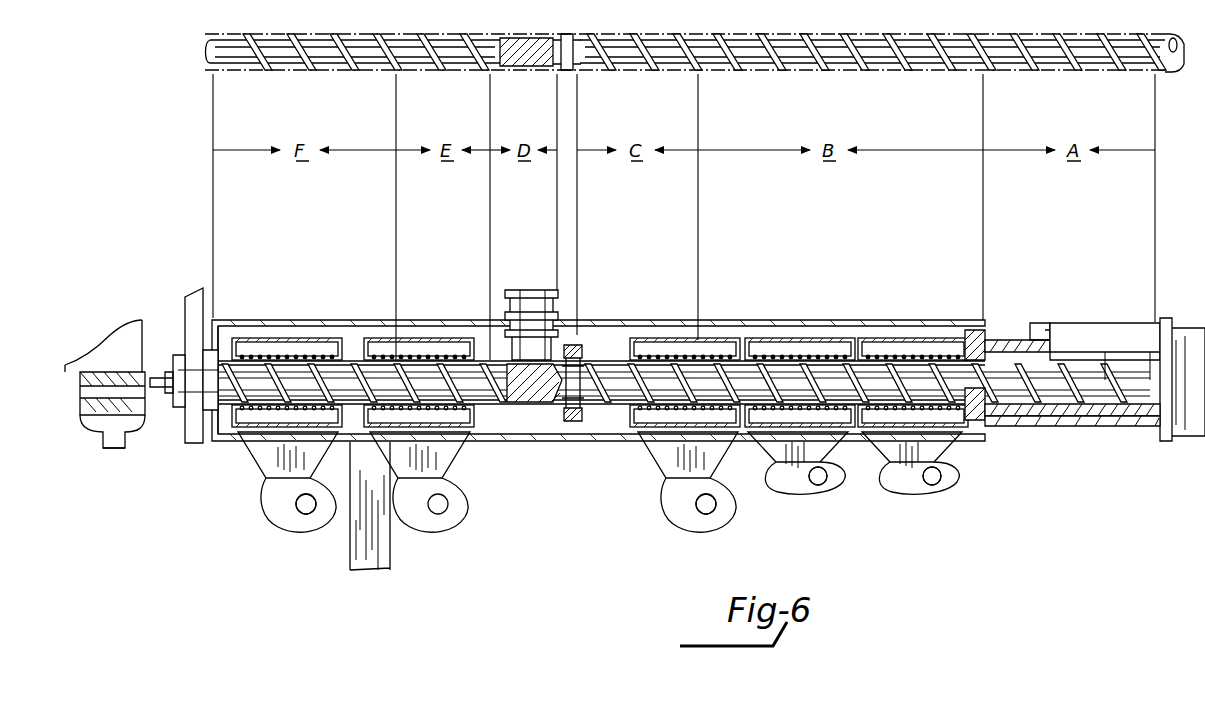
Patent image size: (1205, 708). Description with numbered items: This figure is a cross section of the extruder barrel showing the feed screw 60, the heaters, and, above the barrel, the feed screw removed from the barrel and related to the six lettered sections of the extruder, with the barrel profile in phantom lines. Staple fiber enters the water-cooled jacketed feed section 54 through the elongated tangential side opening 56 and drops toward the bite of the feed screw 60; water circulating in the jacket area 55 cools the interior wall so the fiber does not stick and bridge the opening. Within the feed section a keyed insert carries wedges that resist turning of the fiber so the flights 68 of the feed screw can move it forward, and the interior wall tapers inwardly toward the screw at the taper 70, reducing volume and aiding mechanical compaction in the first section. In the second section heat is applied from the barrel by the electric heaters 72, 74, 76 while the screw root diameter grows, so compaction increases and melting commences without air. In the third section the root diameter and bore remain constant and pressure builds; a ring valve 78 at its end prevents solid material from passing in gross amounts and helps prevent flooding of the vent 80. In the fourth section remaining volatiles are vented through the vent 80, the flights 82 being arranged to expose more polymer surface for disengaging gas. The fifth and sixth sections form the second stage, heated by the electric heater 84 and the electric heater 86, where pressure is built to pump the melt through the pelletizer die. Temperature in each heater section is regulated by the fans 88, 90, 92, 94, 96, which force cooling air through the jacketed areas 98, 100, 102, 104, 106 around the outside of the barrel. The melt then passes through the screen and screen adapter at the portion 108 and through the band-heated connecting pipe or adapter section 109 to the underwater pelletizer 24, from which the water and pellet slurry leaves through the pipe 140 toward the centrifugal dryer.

The underwater pelletizer 24 is at (86, 428).
The feed section 54 is at (1112, 320).
The jacket area 55 is at (1094, 428).
The tangential side opening 56 is at (1058, 324).
The feed screw 60 is at (1116, 322).
The flights 68 is at (1118, 372).
The taper 70 is at (1015, 425).
The electric heater 72 is at (879, 441).
The electric heater 74 is at (768, 441).
The electric heater 76 is at (641, 441).
The ring valve 78 is at (568, 421).
The vent 80 is at (550, 289).
The flights 82 is at (535, 404).
The electric heater 84 is at (470, 441).
The electric heater 86 is at (242, 441).
The fan 88 is at (946, 492).
The fan 90 is at (830, 492).
The fan 92 is at (712, 527).
The fan 94 is at (446, 527).
The fan 96 is at (305, 527).
The jacketed area 98 is at (900, 346).
The jacketed area 100 is at (805, 346).
The jacketed area 102 is at (720, 346).
The jacketed area 104 is at (420, 346).
The jacketed area 106 is at (275, 346).
The screen and screen adapter portion 108 is at (186, 300).
The connecting pipe or adapter section 109 is at (160, 390).
The pipe 140 is at (113, 450).